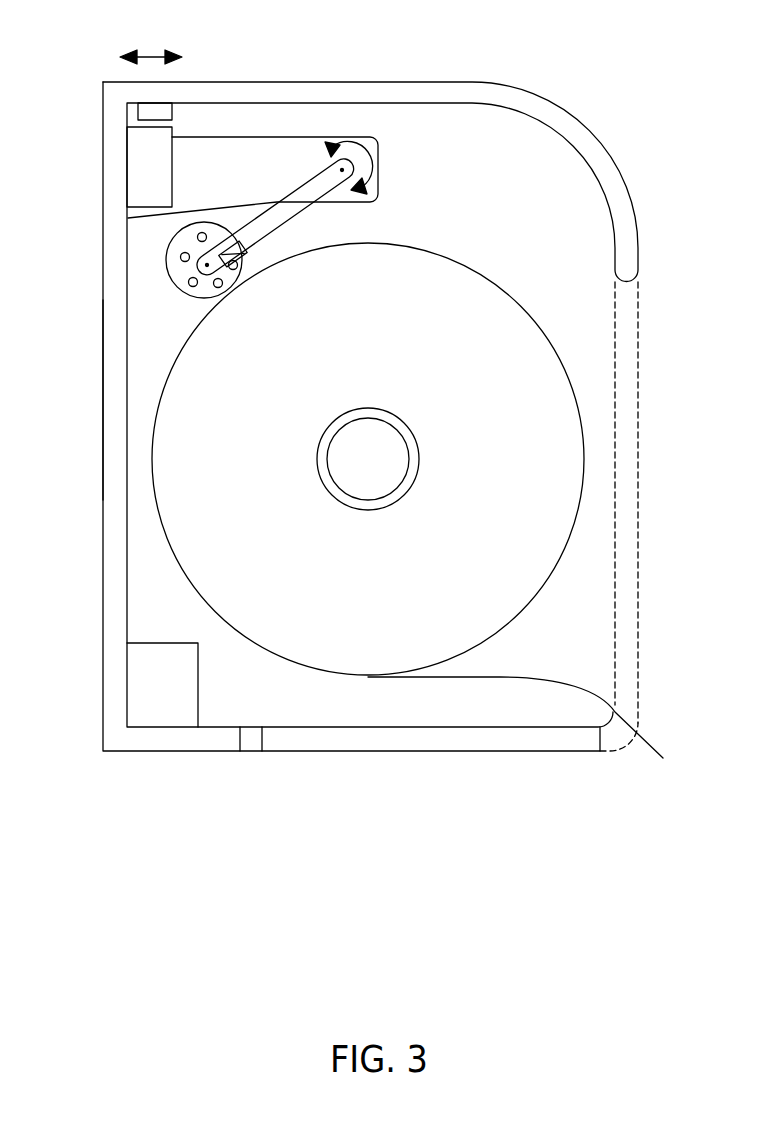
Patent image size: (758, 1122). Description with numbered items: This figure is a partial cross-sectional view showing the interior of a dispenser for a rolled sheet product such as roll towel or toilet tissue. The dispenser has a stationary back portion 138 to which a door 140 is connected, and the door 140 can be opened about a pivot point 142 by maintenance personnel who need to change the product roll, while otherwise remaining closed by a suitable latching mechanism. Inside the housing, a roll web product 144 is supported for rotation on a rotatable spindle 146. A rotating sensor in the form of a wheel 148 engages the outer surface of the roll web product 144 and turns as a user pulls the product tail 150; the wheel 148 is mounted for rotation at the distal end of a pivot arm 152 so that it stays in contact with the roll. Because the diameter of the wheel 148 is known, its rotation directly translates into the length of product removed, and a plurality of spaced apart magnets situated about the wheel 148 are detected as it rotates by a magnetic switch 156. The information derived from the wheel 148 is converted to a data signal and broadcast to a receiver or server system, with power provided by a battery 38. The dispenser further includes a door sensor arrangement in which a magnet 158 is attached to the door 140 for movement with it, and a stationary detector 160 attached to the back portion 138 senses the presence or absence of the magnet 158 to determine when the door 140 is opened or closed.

The battery 38 is at (198, 676).
The stationary back portion 138 is at (103, 413).
The door 140 is at (348, 81).
The pivot point 142 is at (277, 742).
The roll web product 144 is at (452, 258).
The rotatable spindle 146 is at (419, 466).
The wheel 148 is at (167, 271).
The product tail 150 is at (650, 737).
The pivot arm 152 is at (300, 216).
The magnetic switch 156 is at (263, 248).
The magnet 158 is at (172, 112).
The stationary detector 160 is at (172, 167).